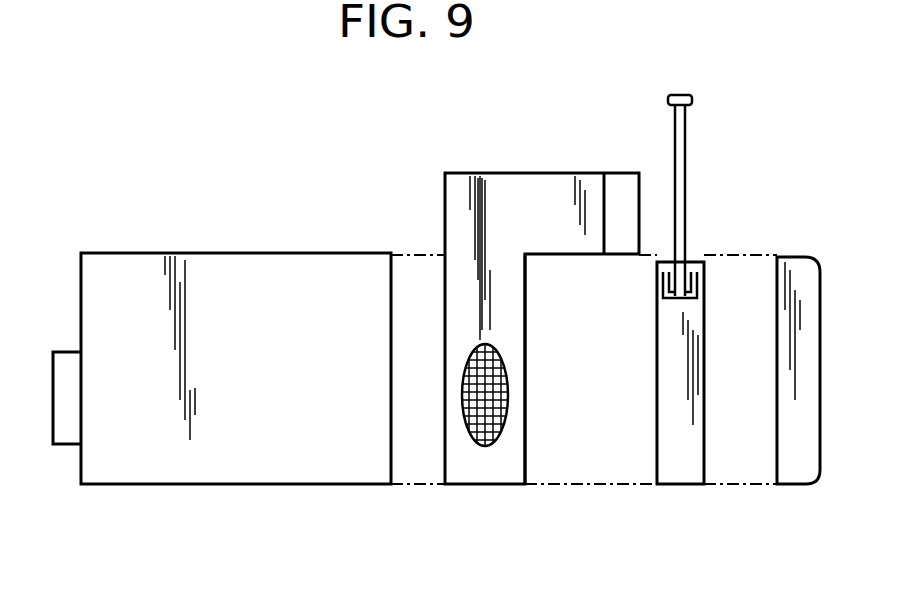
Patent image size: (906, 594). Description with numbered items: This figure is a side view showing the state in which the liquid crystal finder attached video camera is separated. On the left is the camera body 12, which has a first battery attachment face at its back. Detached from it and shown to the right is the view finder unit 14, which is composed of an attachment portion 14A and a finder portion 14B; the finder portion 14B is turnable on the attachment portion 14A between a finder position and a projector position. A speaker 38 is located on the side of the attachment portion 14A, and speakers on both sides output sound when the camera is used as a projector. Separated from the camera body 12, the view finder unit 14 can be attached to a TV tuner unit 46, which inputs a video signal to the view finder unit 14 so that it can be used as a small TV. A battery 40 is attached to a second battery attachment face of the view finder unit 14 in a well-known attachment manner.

The camera body 12 is at (277, 245).
The view finder unit 14 is at (533, 172).
The attachment portion 14A is at (510, 281).
The finder portion 14B is at (485, 185).
The speaker 38 is at (488, 447).
The TV tuner unit 46 is at (684, 470).
The battery 40 is at (797, 470).